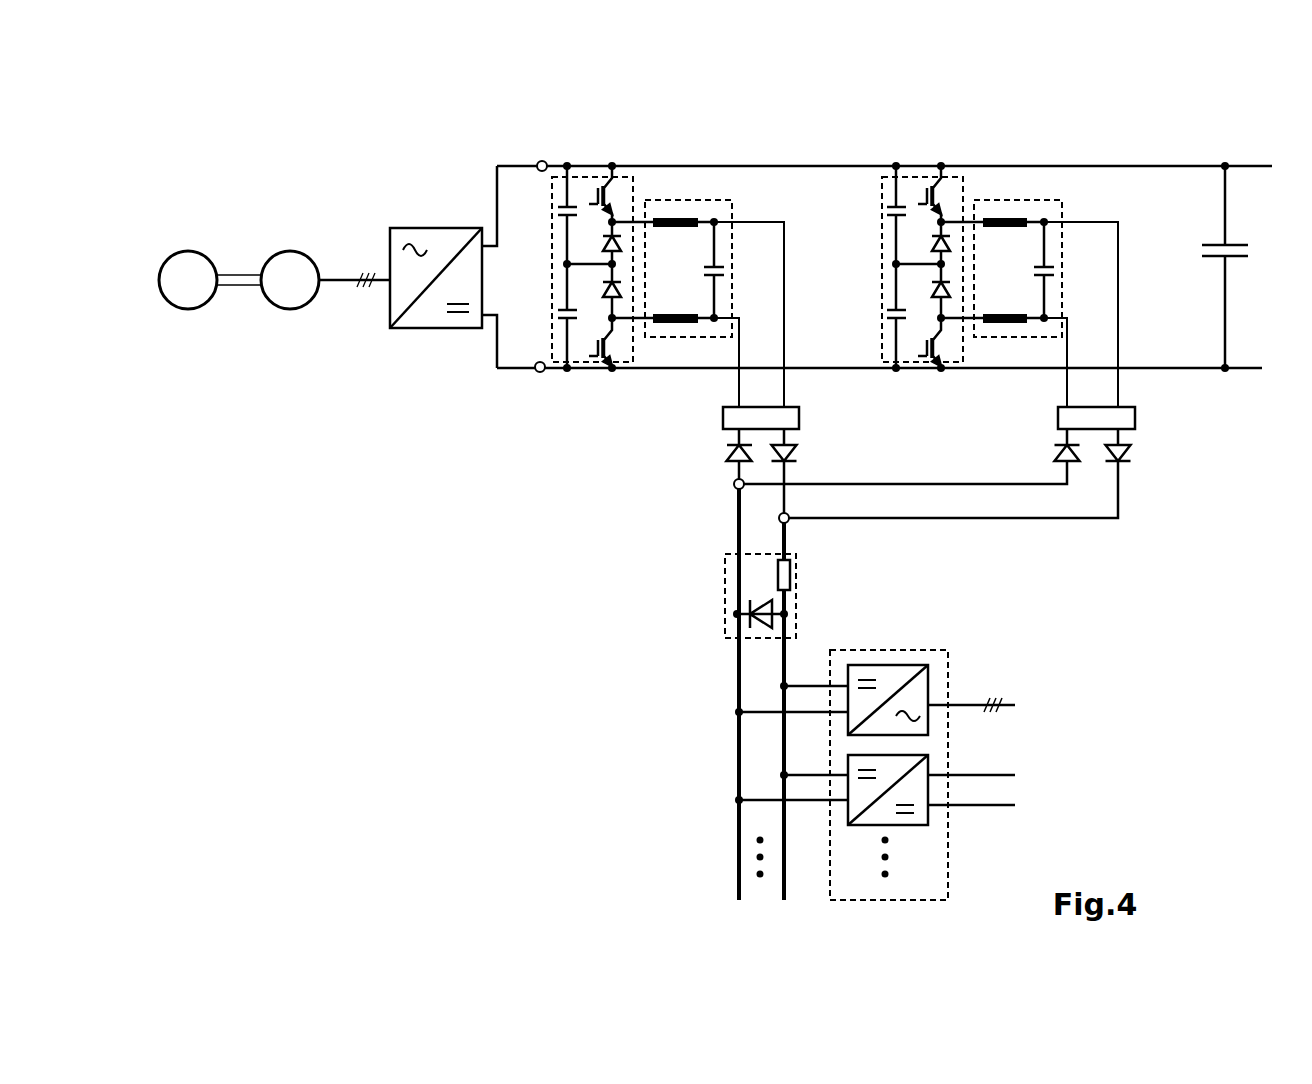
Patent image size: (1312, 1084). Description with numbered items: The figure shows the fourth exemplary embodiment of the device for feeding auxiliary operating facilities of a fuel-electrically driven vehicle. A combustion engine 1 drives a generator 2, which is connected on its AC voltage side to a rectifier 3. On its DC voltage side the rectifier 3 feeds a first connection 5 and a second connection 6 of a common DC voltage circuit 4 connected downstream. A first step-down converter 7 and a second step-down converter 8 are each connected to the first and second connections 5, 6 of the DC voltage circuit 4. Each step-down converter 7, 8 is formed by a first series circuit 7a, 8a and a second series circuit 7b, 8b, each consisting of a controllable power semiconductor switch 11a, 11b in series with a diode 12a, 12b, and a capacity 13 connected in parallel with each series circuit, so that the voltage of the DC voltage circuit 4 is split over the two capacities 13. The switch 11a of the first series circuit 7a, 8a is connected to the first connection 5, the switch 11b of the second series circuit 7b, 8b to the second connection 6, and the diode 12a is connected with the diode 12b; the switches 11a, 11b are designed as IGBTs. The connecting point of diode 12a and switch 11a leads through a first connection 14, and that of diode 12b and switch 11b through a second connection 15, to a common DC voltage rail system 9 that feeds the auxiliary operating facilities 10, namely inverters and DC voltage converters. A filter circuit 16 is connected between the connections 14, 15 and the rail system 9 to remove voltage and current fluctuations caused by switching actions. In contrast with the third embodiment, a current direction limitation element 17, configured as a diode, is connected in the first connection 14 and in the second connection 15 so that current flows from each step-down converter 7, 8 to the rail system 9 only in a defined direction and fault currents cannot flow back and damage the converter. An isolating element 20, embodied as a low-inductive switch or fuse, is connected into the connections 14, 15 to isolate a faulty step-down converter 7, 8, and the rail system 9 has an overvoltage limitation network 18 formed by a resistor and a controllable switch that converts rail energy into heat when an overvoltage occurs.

The combustion engine 1 is at (188, 251).
The generator 2 is at (290, 251).
The rectifier 3 is at (398, 228).
The DC voltage circuit 4 is at (500, 274).
The first connection 5 is at (542, 161).
The second connection 6 is at (535, 368).
The first step-down converter 7 is at (587, 177).
The first series circuit of the first step-down converter 7a is at (587, 226).
The second series circuit of the first step-down converter 7b is at (587, 328).
The second step-down converter 8 is at (955, 305).
The first series circuit of the second step-down converter 8a is at (953, 196).
The second series circuit of the second step-down converter 8b is at (939, 348).
The common DC voltage rail system 9 is at (758, 753).
The auxiliary operating facilities 10 is at (830, 670).
The controllable power semiconductor switch of the first series circuit 11a is at (777, 151).
The controllable power semiconductor switch of the second series circuit 11b is at (866, 224).
The diode of the first series circuit 12a is at (618, 236).
The diode of the second series circuit 12b is at (619, 282).
The capacity 13 is at (529, 242).
The first connection 14 is at (739, 350).
The second connection 15 is at (784, 392).
The filter circuit 16 is at (723, 200).
The current direction limitation element 17 is at (790, 407).
The overvoltage limitation network 18 is at (725, 602).
The isolating element 20 is at (723, 420).